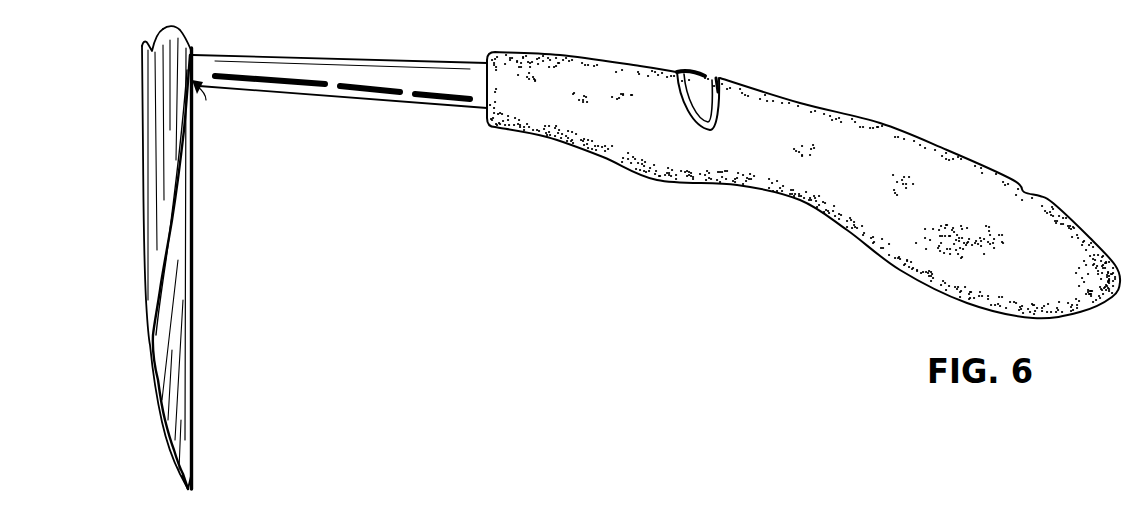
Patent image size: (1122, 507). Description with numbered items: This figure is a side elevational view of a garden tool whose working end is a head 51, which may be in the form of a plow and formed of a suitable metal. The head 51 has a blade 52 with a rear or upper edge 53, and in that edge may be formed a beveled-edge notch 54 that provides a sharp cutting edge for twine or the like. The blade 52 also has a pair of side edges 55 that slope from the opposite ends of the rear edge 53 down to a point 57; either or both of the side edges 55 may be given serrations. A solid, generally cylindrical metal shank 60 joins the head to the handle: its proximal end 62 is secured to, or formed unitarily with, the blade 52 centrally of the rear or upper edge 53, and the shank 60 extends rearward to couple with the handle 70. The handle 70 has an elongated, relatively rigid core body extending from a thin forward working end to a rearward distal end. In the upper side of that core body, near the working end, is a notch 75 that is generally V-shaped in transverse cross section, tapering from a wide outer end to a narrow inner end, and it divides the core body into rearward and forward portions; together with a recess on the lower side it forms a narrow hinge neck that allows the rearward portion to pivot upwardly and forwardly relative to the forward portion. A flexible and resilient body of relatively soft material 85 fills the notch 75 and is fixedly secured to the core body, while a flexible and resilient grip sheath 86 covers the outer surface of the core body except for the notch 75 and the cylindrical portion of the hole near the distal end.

The head 51 is at (118, 318).
The blade 52 is at (178, 370).
The rear or upper edge 53 is at (193, 44).
The beveled-edge notch 54 is at (153, 50).
The side edges 55 is at (178, 188).
The point 57 is at (194, 489).
The shank 60 is at (416, 119).
The proximal end 62 is at (206, 92).
The handle 70 is at (764, 253).
The notch 75 is at (717, 80).
The body of relatively soft material 85 is at (700, 73).
The grip sheath 86 is at (963, 162).